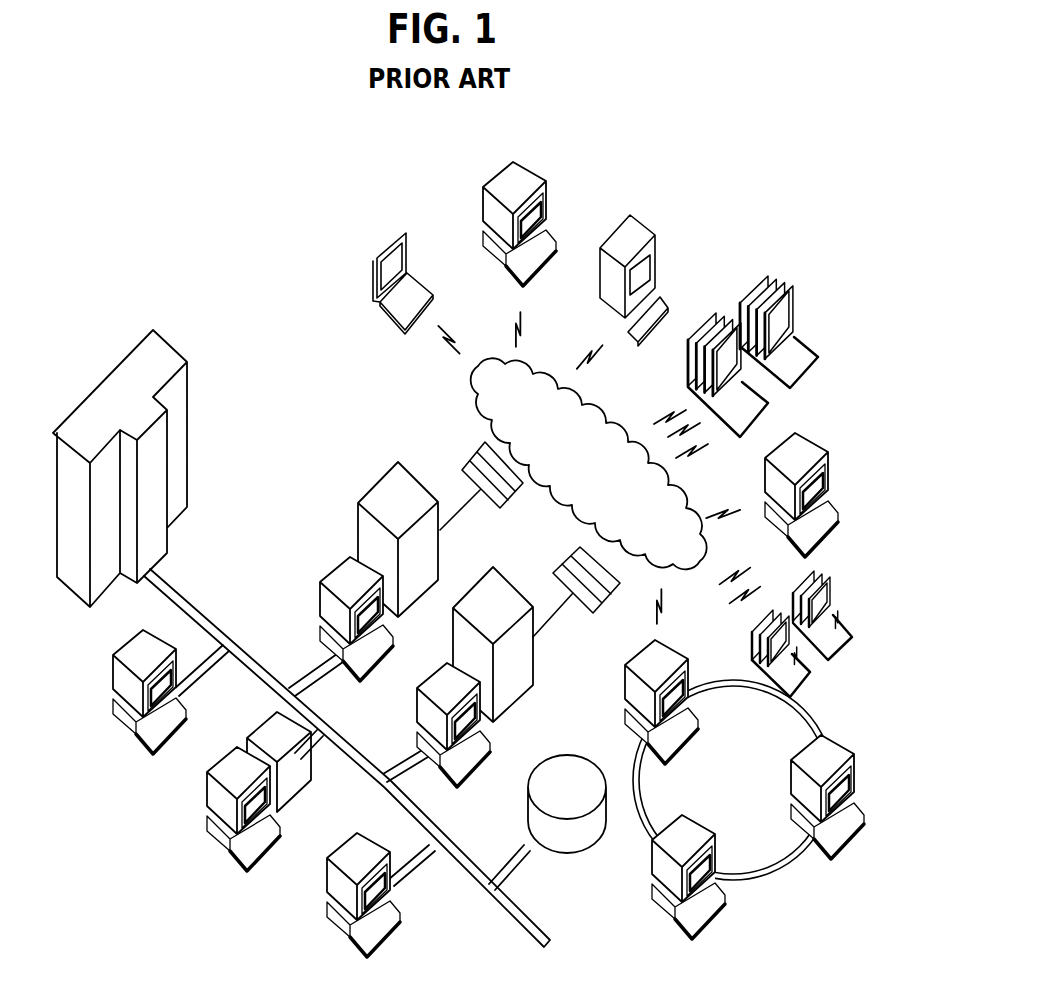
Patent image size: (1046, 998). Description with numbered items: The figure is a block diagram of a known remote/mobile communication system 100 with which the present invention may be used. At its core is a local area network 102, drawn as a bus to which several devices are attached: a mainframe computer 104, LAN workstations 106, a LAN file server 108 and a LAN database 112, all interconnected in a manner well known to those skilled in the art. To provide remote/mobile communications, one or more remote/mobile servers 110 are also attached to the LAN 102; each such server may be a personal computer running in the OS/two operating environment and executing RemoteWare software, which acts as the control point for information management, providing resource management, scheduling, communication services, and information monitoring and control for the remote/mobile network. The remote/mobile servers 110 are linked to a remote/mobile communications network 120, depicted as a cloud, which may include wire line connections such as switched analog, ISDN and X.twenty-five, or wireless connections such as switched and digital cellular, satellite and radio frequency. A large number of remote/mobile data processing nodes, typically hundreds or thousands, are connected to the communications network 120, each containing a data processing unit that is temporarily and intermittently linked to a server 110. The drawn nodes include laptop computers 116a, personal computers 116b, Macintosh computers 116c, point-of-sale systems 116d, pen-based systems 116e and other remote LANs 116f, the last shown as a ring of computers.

The remote/mobile communication system 100 is at (226, 251).
The local area network (LAN) 102 is at (523, 933).
The mainframe computer 104 is at (127, 362).
The LAN workstations 106 is at (142, 737).
The LAN file server 108 is at (227, 847).
The remote/mobile servers 110 is at (393, 473).
The LAN database 112 is at (575, 758).
The laptop computers 116a is at (377, 276).
The personal computers 116b is at (545, 182).
The Macintosh computers 116c is at (655, 250).
The point-of-sale systems 116d is at (830, 487).
The pen-based systems 116e is at (850, 630).
The remote LANs 116f is at (744, 789).
The remote/mobile communications network 120 is at (610, 471).